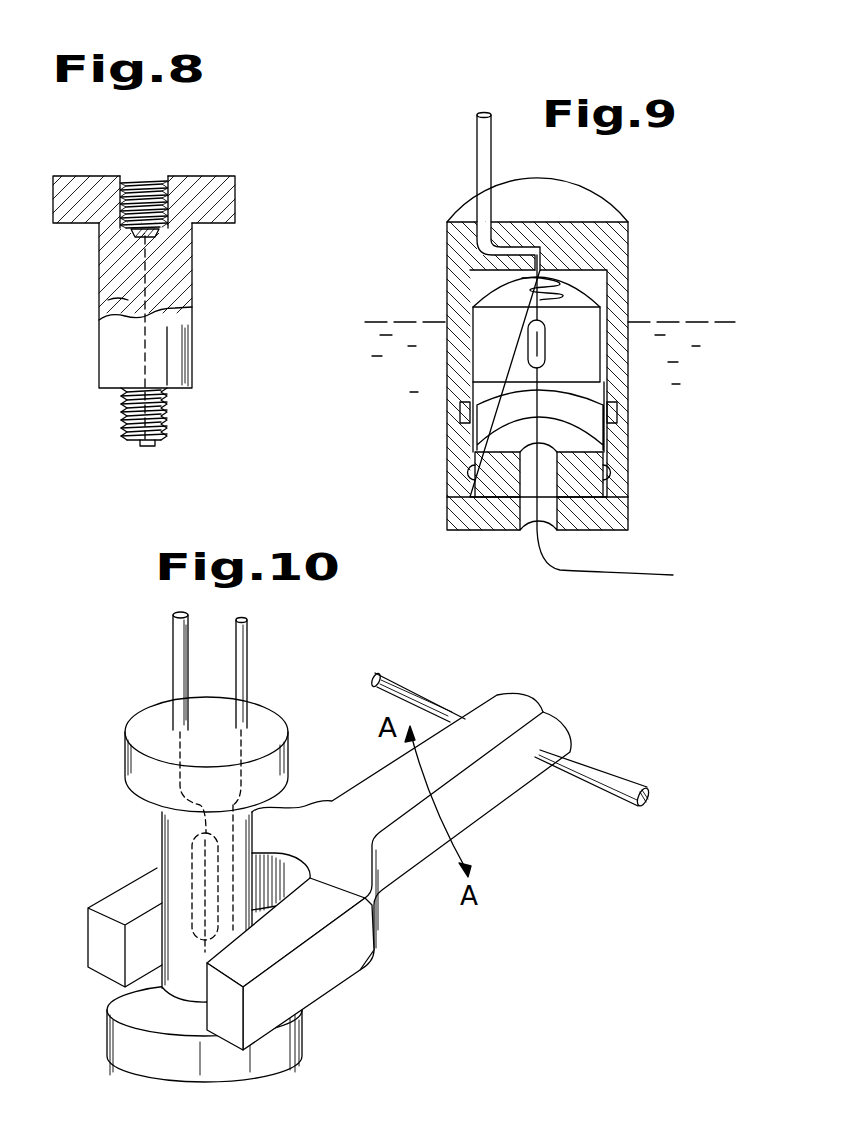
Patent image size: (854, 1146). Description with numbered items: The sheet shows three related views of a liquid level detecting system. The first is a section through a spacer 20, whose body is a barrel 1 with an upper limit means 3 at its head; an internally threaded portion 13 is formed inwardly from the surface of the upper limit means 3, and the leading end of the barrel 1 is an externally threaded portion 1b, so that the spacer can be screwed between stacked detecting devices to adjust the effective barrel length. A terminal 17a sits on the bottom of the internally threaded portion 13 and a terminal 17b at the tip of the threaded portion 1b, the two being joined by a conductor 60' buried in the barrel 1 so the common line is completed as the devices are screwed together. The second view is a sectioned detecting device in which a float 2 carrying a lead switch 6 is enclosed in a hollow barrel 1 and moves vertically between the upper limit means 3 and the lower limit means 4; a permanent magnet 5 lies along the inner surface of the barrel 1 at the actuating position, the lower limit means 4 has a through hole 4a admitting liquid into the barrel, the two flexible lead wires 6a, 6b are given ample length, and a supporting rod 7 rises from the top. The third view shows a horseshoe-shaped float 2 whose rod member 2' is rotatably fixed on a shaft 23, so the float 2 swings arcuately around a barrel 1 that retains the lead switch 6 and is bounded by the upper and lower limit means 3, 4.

In FIG. 8, the barrel 1 is at (178, 292).
In FIG. 9, the barrel 1 is at (447, 290).
In FIG. 8, the threaded portion 1b is at (166, 411).
In FIG. 9, the float 2 is at (570, 330).
In FIG. 10, the float 2 is at (244, 951).
In FIG. 10, the rod member 2' is at (411, 831).
In FIG. 8, the upper limit means 3 is at (202, 197).
In FIG. 9, the upper limit means 3 is at (600, 236).
In FIG. 10, the upper limit means 3 is at (273, 737).
In FIG. 9, the lower limit means 4 is at (497, 490).
In FIG. 9, the through hole 4a is at (530, 522).
In FIG. 9, the permanent magnet 5 is at (608, 419).
In FIG. 9, the lead switch 6 is at (528, 348).
In FIG. 10, the lead switch 6 is at (193, 858).
In FIG. 9, the lead wire 6a is at (578, 291).
In FIG. 9, the lead wire 6b is at (643, 573).
In FIG. 10, the lead wire 6b is at (241, 666).
In FIG. 9, the supporting rod 7 is at (483, 162).
In FIG. 10, the supporting rod 7 is at (178, 660).
In FIG. 8, the internally threaded portion 13 is at (147, 185).
In FIG. 8, the terminal 17a is at (133, 233).
In FIG. 8, the terminal 17b is at (143, 448).
In FIG. 8, the spacer 20 is at (217, 256).
In FIG. 10, the shaft 23 is at (623, 780).
In FIG. 8, the conductor 60' is at (85, 304).